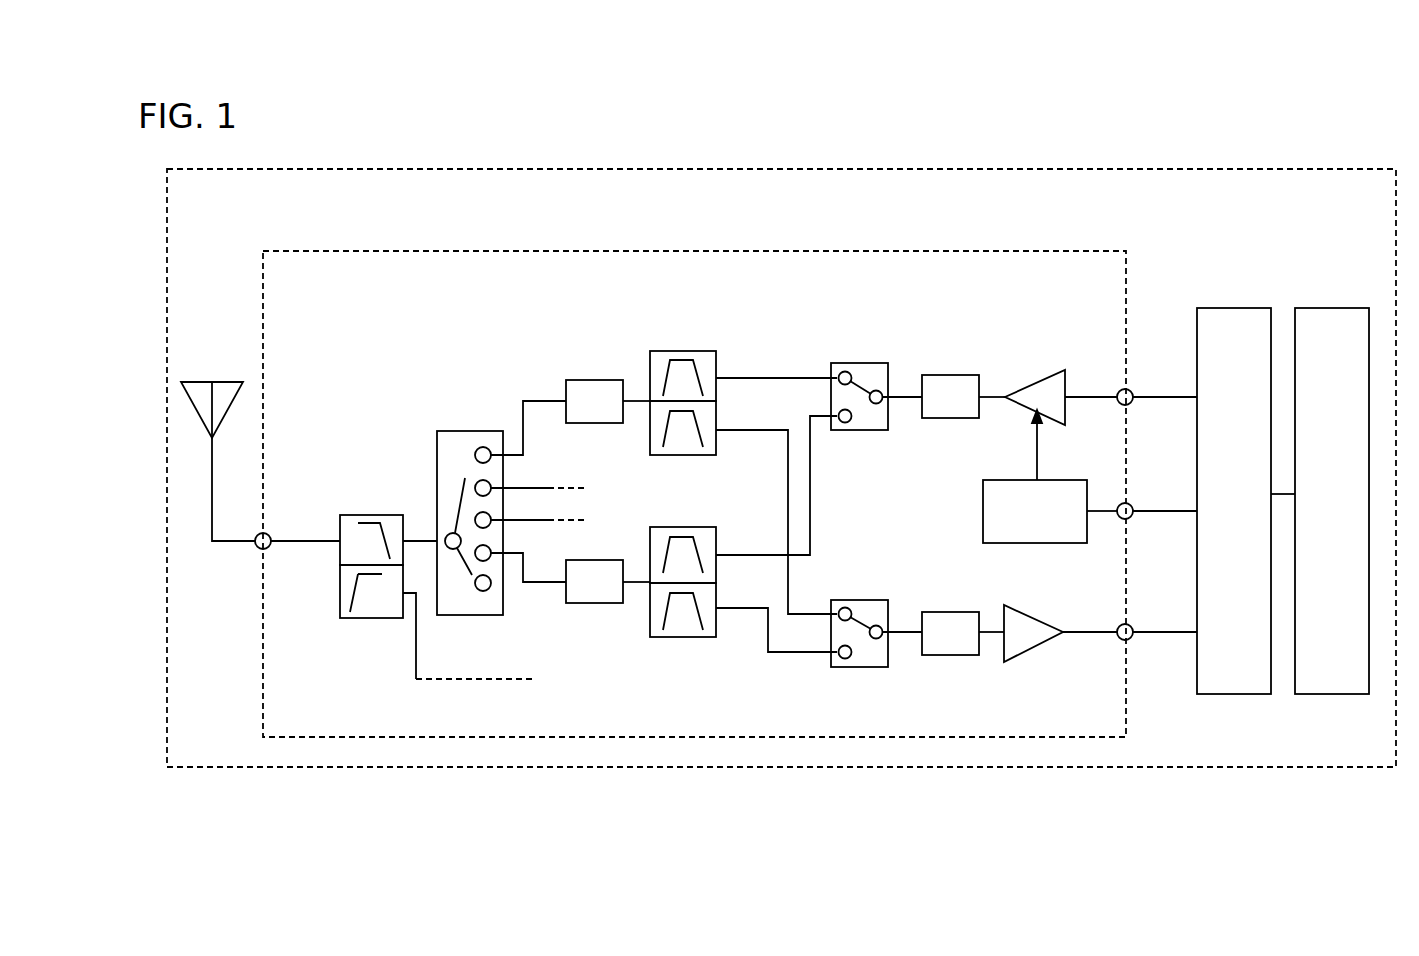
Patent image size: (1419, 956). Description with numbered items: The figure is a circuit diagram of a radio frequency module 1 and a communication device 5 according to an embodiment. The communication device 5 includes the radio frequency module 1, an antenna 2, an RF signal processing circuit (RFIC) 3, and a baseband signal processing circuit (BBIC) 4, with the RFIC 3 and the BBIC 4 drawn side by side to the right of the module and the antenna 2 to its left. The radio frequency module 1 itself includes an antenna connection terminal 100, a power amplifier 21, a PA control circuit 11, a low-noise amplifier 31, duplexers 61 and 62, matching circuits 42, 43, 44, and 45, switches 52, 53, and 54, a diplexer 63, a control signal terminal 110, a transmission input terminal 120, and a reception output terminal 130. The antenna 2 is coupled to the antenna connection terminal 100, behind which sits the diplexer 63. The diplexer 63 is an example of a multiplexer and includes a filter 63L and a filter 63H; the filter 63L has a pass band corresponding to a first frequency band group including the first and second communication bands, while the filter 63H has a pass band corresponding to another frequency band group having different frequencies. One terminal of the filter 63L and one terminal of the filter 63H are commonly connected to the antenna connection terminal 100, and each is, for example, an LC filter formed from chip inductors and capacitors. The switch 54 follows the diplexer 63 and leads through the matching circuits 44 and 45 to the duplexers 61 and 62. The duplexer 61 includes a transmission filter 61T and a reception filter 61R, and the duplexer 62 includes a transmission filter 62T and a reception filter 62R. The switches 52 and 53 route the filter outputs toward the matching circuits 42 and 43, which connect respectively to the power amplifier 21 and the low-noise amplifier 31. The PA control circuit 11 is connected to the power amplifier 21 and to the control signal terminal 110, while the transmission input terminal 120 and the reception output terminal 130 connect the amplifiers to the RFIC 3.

The radio frequency module 1 is at (1090, 251).
The antenna 2 is at (204, 382).
The RF signal processing circuit (RFIC) 3 is at (1234, 308).
The baseband signal processing circuit (BBIC) 4 is at (1331, 308).
The communication device 5 is at (1355, 169).
The PA control circuit 11 is at (1023, 480).
The power amplifier 21 is at (1047, 371).
The low-noise amplifier 31 is at (1050, 612).
The matching circuit 42 is at (945, 375).
The matching circuit 43 is at (945, 612).
The matching circuit 44 is at (583, 380).
The matching circuit 45 is at (583, 560).
The switch 52 is at (862, 363).
The switch 53 is at (862, 600).
The switch 54 is at (475, 431).
The duplexer 61 is at (743, 468).
The transmission filter 61T is at (670, 350).
The reception filter 61R is at (743, 507).
The duplexer 62 is at (743, 539).
The transmission filter 62T is at (670, 527).
The reception filter 62R is at (743, 623).
The diplexer 63 is at (404, 581).
The filter 63L is at (393, 513).
The filter 63H is at (366, 607).
The antenna connection terminal 100 is at (256, 548).
The control signal terminal 110 is at (1128, 519).
The transmission input terminal 120 is at (1128, 405).
The reception output terminal 130 is at (1128, 640).